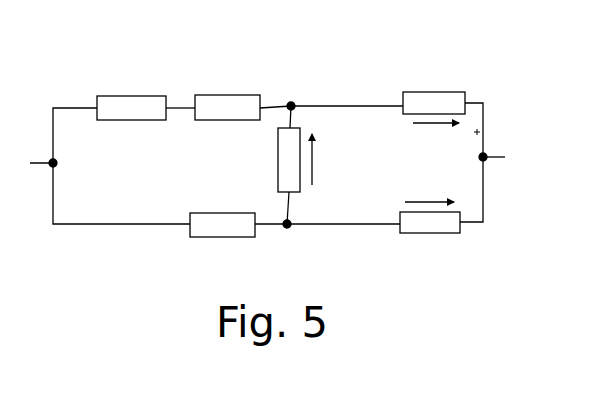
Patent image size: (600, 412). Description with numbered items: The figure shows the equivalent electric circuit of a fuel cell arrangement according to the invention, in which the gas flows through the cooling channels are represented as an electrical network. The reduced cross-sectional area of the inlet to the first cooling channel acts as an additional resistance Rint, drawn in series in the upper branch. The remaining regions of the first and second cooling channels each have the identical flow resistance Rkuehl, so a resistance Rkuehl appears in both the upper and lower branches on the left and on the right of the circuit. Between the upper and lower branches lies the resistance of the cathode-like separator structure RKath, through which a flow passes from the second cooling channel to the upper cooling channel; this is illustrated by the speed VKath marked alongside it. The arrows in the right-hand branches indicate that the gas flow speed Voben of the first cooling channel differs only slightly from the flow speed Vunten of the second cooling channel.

The additional resistance Rint is at (131, 92).
The cooling channel flow resistance Rkuehl is at (327, 172).
The resistance of the cathode-like separator structure RKath is at (260, 165).
The speed through the cathode-like separator structure VKath is at (338, 160).
The gas flow speed of the first cooling channel Voben is at (429, 137).
The flow speed of the second cooling channel Vunten is at (432, 189).